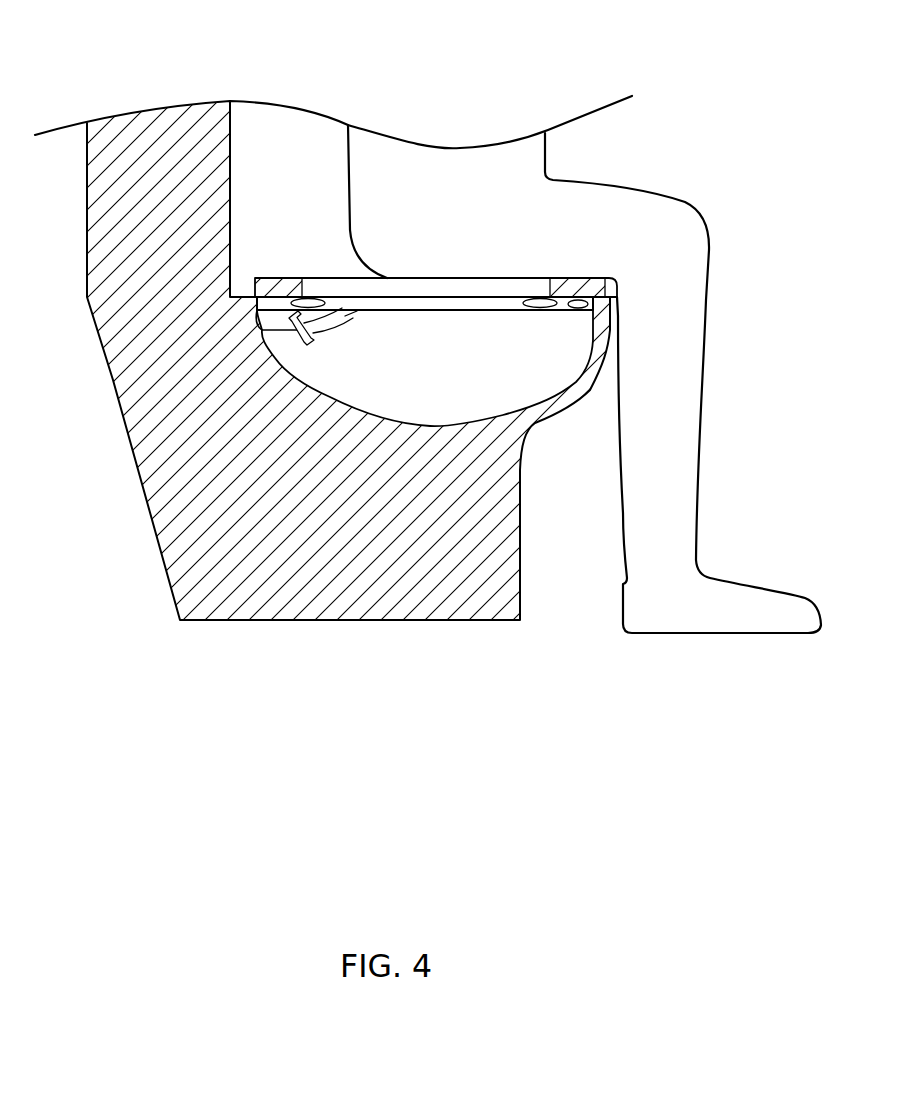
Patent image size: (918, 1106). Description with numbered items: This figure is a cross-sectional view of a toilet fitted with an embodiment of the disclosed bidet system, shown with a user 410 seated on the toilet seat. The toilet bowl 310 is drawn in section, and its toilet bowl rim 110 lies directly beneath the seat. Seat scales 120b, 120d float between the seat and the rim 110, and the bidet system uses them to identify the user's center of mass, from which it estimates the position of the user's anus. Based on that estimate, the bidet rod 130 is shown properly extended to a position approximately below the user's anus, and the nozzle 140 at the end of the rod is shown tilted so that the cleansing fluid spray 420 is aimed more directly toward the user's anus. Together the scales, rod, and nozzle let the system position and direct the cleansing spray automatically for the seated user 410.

The toilet bowl rim 110 is at (581, 284).
The seat scale 120b is at (311, 298).
The seat scale 120d is at (590, 303).
The bidet rod 130 is at (281, 340).
The nozzle 140 is at (314, 340).
The toilet bowl 310 is at (574, 392).
The user 410 is at (447, 217).
The cleansing fluid spray 420 is at (353, 322).